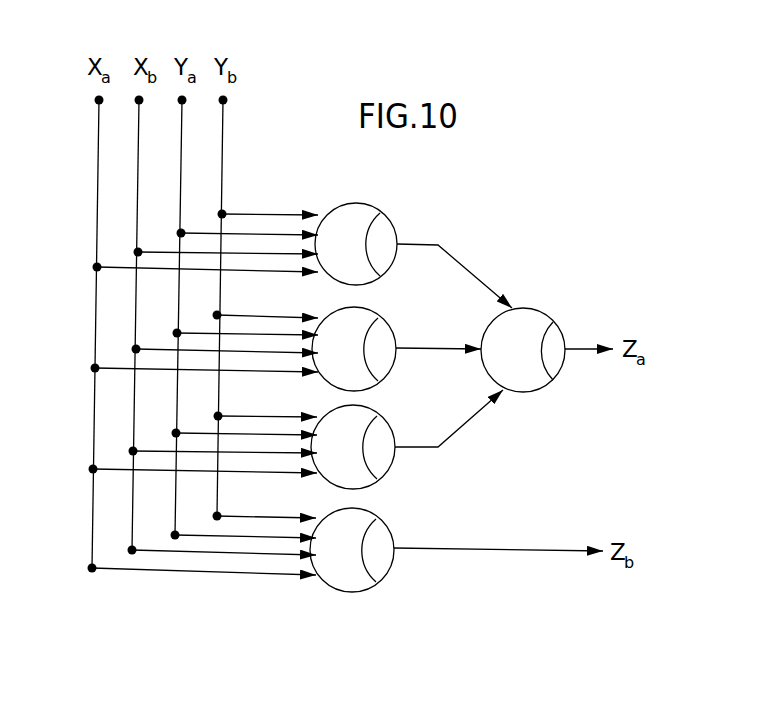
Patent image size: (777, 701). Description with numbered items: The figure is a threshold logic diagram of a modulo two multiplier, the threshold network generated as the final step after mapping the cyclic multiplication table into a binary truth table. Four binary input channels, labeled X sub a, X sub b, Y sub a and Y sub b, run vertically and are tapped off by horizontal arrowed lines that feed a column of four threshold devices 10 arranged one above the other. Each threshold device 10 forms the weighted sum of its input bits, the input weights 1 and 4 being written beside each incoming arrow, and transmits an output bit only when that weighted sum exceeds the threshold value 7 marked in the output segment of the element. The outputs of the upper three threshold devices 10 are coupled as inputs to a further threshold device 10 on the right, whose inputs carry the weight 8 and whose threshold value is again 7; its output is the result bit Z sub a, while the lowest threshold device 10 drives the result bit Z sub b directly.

The threshold device 10 is at (362, 213).
The output weight 7 is at (461, 397).
The input weight 8 is at (504, 348).
The input weight 4 is at (328, 395).
The input weight 1 is at (328, 395).